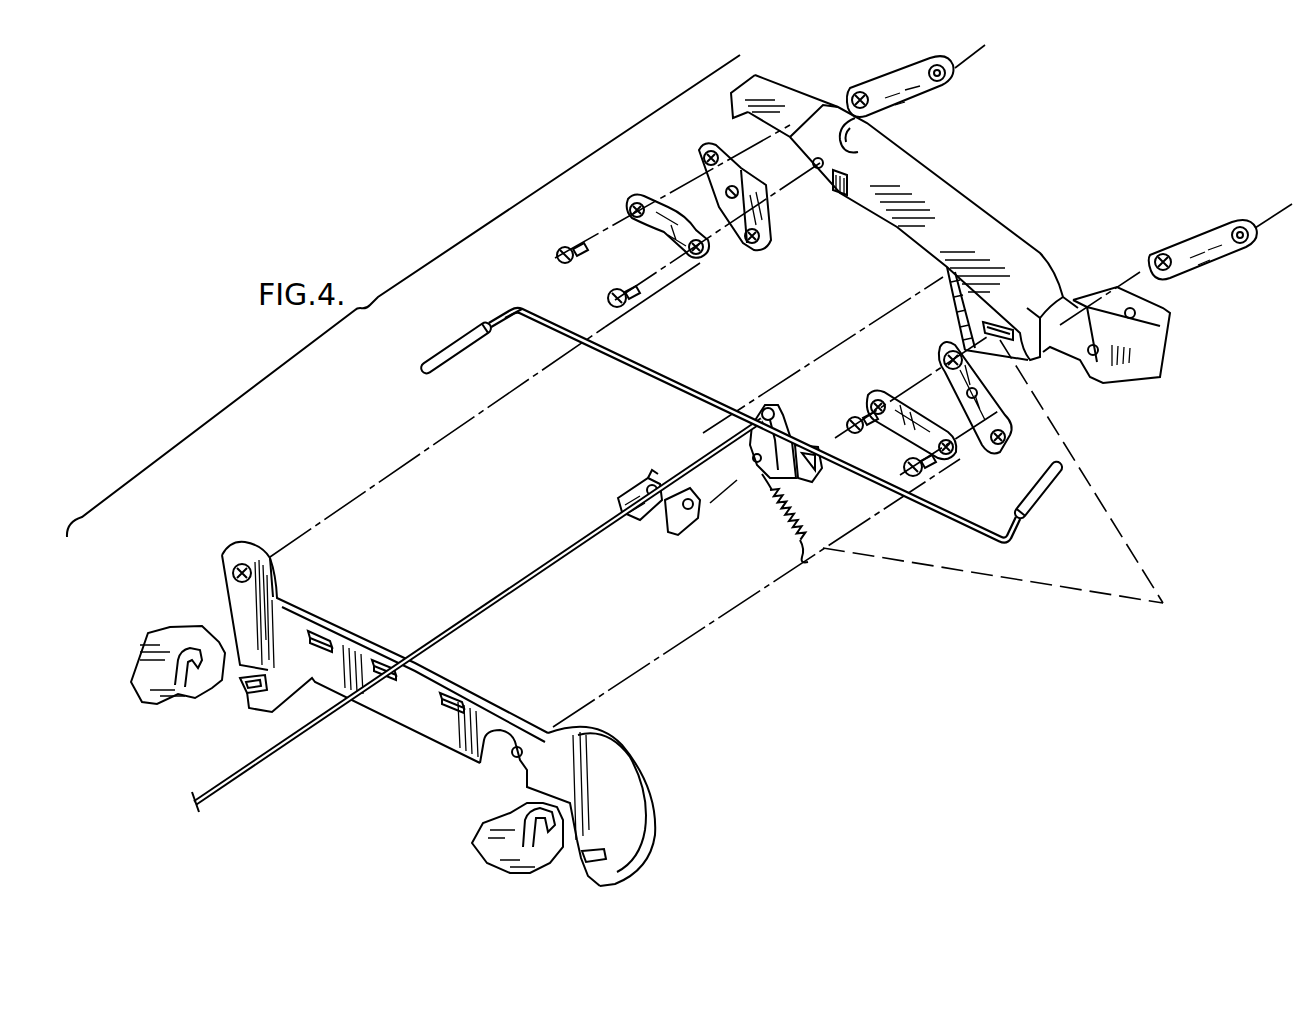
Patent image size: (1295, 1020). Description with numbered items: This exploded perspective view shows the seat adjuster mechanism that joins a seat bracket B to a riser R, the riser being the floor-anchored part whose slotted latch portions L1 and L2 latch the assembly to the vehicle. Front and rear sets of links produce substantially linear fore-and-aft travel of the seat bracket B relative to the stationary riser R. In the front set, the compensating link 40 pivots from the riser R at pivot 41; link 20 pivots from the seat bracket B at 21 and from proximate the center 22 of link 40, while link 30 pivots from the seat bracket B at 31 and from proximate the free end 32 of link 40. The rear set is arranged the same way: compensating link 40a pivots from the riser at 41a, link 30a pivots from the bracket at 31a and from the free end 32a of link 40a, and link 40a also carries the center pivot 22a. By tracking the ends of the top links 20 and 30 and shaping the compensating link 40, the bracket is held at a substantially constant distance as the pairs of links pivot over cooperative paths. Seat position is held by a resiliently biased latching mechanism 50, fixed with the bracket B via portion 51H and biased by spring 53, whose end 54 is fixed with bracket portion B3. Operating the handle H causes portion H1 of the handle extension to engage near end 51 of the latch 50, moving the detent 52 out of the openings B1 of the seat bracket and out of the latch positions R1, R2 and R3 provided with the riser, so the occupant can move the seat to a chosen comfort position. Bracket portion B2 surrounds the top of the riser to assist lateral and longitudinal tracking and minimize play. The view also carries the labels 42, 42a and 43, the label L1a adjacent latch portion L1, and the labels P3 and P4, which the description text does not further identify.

The link 20 is at (897, 66).
The pivot 21 is at (950, 76).
The center pivot of link 40 22 is at (850, 92).
The center pivot of link 40a 22a is at (1147, 257).
The link 30 is at (655, 222).
The link 30a is at (900, 433).
The pivot 31 is at (698, 262).
The pivot 31a is at (925, 478).
The free end of link 40 32 is at (632, 198).
The free end of link 40a 32a is at (870, 405).
The compensating link 40 is at (763, 217).
The compensating link 40a is at (1080, 398).
The pivot 41 is at (752, 245).
The pivot 41a is at (995, 405).
The hole 42 is at (703, 150).
The hole 42a is at (942, 360).
The hole 43 is at (734, 183).
The latching mechanism 50 is at (541, 616).
The end of the latch 51 is at (745, 420).
The fixing portion 51H is at (677, 532).
The detent 52 is at (815, 472).
The spring 53 is at (778, 525).
The spring end 54 is at (803, 562).
The seat bracket B is at (942, 205).
The openings of the seat bracket B1 is at (1000, 322).
The bracket portion B2 is at (947, 308).
The bracket portion B3 is at (1062, 298).
The handle H is at (465, 337).
The handle extension portion H1 is at (530, 308).
The latch mechanism L1 is at (287, 695).
The lever tab L1a is at (250, 694).
The latch mechanism L2 is at (618, 855).
The pad P3 is at (170, 682).
The pad P4 is at (485, 858).
The riser R is at (625, 787).
The latch position R1 is at (325, 630).
The latch position R2 is at (385, 660).
The latch position R3 is at (455, 695).